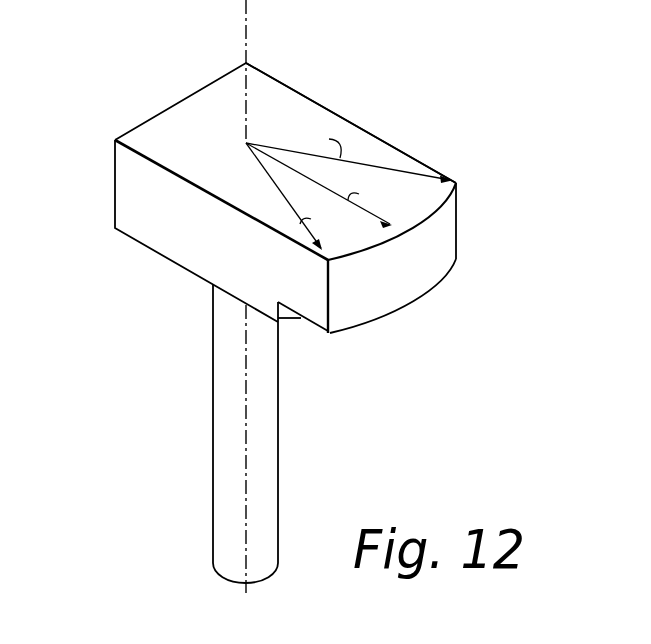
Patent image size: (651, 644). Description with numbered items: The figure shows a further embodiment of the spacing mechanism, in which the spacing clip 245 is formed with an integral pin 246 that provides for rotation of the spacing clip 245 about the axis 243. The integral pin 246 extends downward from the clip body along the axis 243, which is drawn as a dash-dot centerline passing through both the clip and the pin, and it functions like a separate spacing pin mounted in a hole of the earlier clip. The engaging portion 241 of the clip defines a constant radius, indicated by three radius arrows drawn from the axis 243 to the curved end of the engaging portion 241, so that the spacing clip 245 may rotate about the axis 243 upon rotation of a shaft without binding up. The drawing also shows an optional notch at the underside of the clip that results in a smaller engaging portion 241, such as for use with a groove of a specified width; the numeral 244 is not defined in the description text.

The engaging portion 241 is at (448, 161).
The axis 243 is at (247, 19).
The tool 244 is at (376, 76).
The spacing clip 245 is at (360, 127).
The integral pin 246 is at (272, 447).